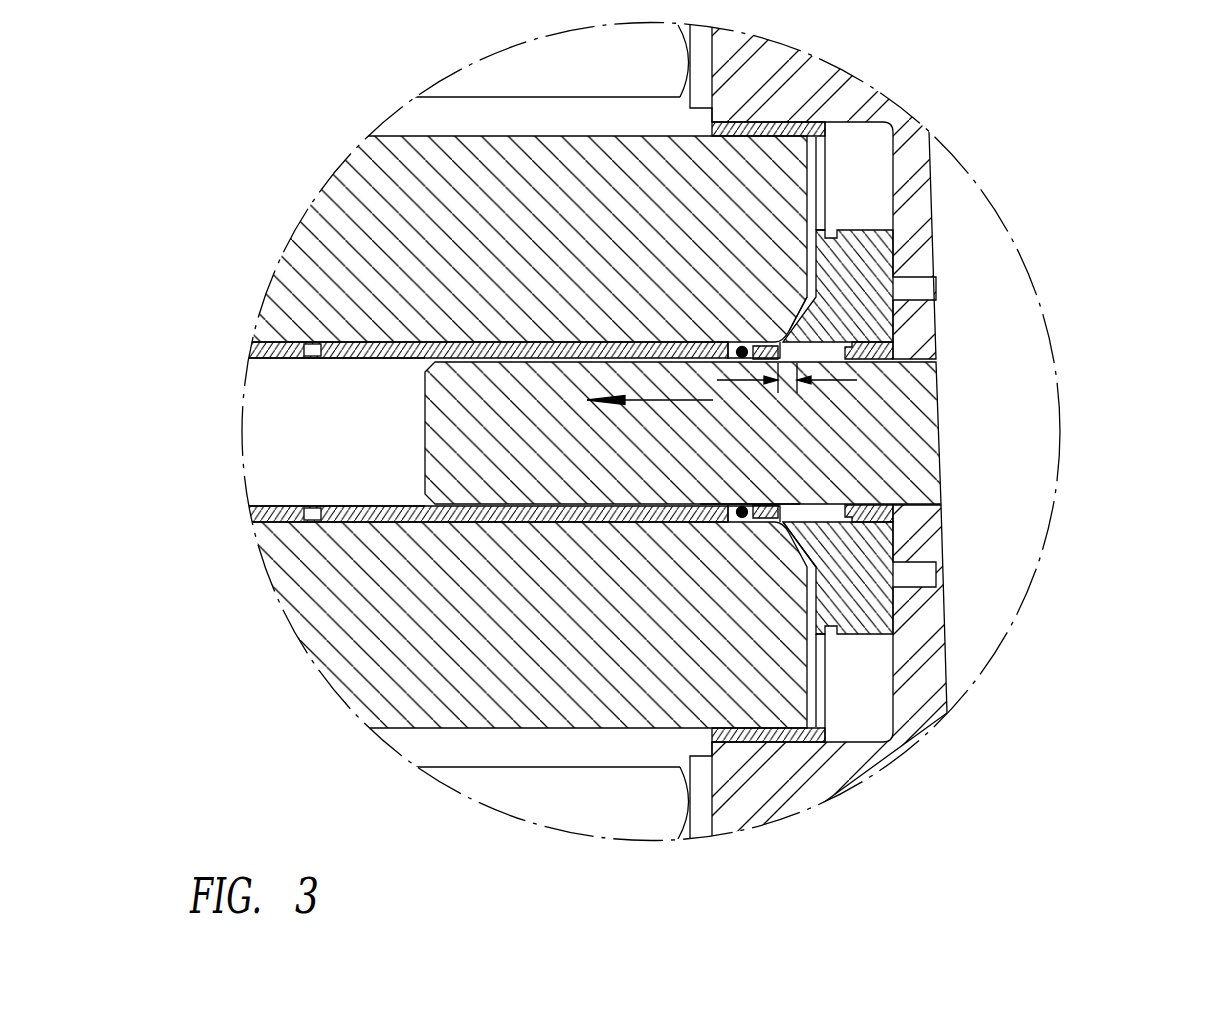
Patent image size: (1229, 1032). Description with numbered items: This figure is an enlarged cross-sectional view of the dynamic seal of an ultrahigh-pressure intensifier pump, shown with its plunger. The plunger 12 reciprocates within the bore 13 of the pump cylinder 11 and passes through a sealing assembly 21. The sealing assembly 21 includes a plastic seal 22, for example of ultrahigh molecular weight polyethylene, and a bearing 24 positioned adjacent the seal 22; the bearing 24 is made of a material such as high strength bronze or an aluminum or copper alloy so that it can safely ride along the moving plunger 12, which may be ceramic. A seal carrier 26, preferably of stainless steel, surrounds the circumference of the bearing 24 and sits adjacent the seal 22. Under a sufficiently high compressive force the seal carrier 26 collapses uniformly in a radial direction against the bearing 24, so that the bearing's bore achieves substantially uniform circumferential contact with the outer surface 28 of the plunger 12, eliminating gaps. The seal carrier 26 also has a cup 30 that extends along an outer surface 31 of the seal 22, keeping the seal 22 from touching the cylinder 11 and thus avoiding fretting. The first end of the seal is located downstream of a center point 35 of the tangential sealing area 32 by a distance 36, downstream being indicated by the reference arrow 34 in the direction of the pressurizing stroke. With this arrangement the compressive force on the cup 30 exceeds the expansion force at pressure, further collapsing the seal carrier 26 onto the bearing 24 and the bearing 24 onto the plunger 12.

The pump cylinder 11 is at (488, 245).
The plunger 12 is at (443, 418).
The bore 13 is at (269, 482).
The sealing assembly 21 is at (743, 533).
The seal 22 is at (753, 507).
The bearing 24 is at (878, 521).
The seal carrier 26 is at (867, 292).
The outer surface of the plunger 28 is at (463, 503).
The cup 30 is at (742, 343).
The outer surface of the seal 31 is at (788, 523).
The tangential sealing area 32 is at (788, 540).
The reference arrow 34 is at (667, 402).
The center point 35 is at (782, 303).
The distance 36 is at (833, 383).